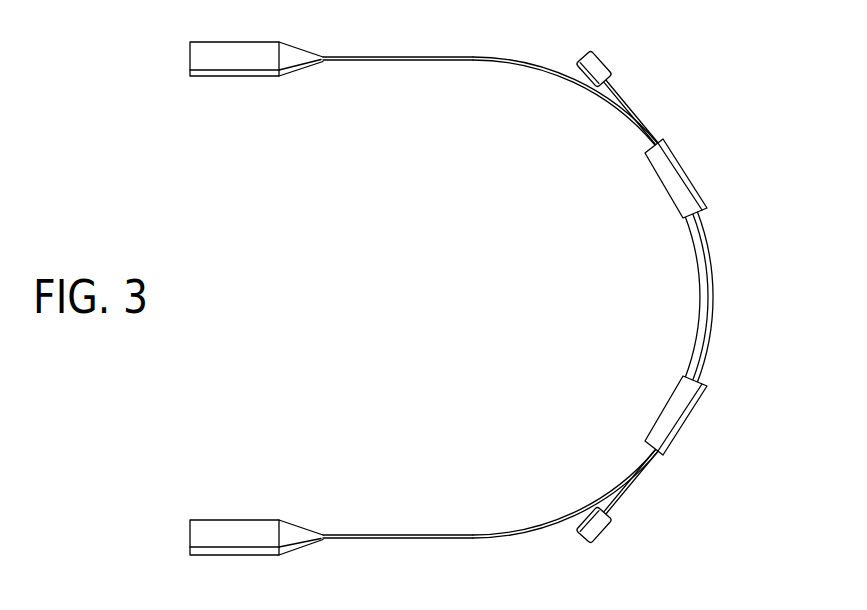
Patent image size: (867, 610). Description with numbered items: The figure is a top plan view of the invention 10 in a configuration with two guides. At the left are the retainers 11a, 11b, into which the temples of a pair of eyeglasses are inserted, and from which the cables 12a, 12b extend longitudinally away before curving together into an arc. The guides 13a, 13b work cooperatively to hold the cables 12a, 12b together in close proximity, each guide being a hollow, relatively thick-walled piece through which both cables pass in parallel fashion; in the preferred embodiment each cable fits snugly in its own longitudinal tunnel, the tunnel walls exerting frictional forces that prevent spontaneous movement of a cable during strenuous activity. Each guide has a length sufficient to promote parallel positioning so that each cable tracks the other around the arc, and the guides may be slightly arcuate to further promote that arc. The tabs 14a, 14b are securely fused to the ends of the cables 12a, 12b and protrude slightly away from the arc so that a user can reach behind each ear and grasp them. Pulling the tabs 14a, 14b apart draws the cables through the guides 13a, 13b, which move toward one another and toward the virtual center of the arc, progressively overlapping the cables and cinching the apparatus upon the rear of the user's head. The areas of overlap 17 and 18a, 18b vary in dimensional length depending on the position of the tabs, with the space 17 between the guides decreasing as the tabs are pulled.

The invention 10 is at (721, 124).
The retainer 11a is at (233, 82).
The retainer 11b is at (230, 514).
The cable 12a is at (430, 62).
The cable 12b is at (430, 533).
The guide 13a is at (682, 177).
The guide 13b is at (678, 415).
The tab 14a is at (600, 538).
The tab 14b is at (598, 70).
The area of overlap 17 is at (713, 210).
The area of overlap 18a is at (650, 491).
The area of overlap 18b is at (653, 105).